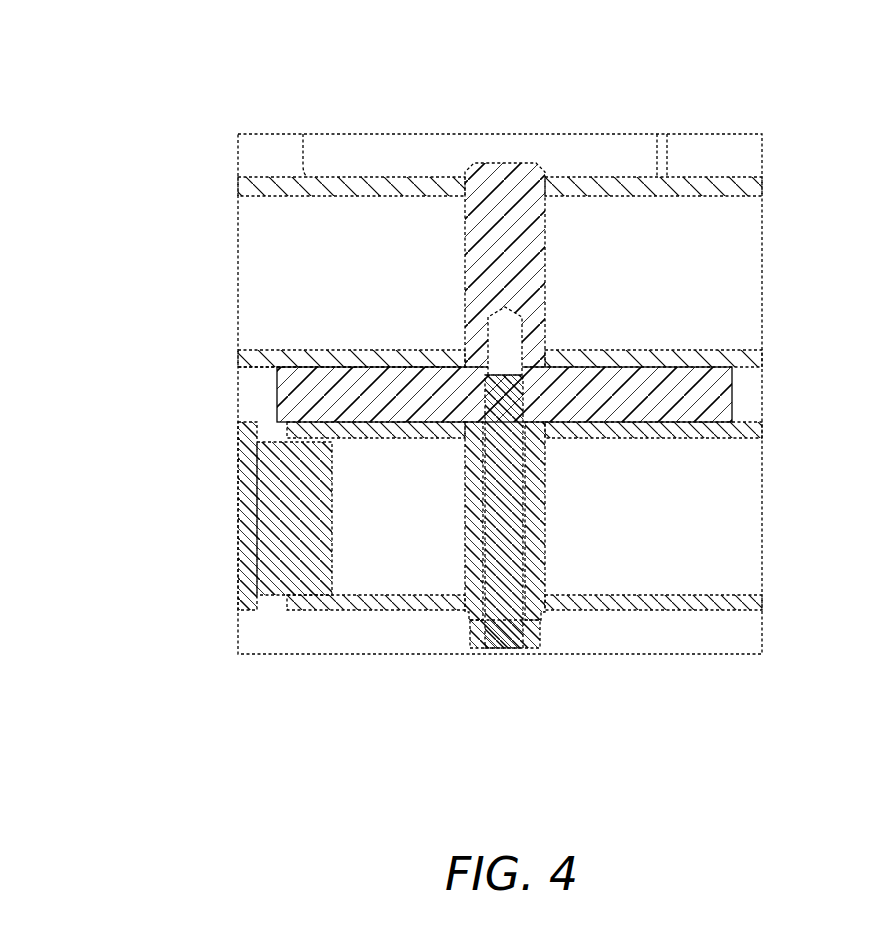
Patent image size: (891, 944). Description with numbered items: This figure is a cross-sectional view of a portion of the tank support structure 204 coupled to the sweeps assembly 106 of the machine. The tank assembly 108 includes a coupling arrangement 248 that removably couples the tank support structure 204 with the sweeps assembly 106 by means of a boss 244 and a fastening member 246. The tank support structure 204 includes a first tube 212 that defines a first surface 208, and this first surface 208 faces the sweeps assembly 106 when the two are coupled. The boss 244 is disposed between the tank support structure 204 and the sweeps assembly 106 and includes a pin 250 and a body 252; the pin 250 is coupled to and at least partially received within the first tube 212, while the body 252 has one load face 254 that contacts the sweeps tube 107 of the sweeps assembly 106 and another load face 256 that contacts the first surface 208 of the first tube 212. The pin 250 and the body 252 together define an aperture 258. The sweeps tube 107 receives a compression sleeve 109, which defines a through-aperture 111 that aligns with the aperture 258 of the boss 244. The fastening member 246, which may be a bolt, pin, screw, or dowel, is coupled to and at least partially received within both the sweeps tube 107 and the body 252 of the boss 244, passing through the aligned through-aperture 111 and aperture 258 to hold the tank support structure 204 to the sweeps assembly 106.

The tank assembly 108 is at (172, 72).
The tank support structure 204 is at (230, 223).
The first surface 208 is at (681, 350).
The first tube 212 is at (262, 286).
The pin 250 is at (500, 187).
The load face 256 is at (373, 367).
The body 252 is at (300, 388).
The aperture 258 is at (510, 343).
The boss 244 is at (265, 404).
The coupling arrangement 248 is at (745, 385).
The load face 254 is at (367, 424).
The sweeps assembly 106 is at (213, 602).
The sweeps tube 107 is at (369, 610).
The compression sleeve 109 is at (475, 538).
The through-aperture 111 is at (485, 568).
The fastening member 246 is at (524, 648).